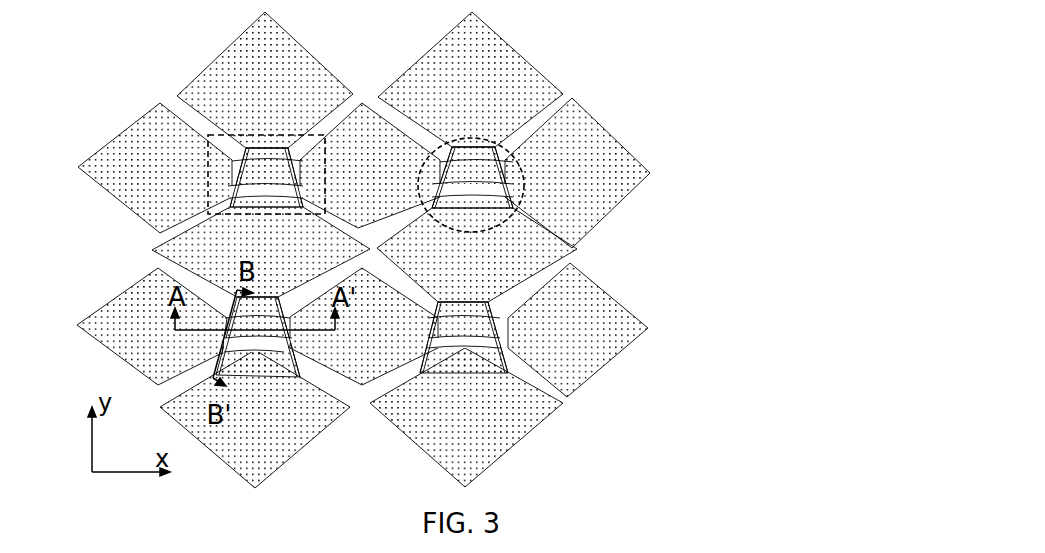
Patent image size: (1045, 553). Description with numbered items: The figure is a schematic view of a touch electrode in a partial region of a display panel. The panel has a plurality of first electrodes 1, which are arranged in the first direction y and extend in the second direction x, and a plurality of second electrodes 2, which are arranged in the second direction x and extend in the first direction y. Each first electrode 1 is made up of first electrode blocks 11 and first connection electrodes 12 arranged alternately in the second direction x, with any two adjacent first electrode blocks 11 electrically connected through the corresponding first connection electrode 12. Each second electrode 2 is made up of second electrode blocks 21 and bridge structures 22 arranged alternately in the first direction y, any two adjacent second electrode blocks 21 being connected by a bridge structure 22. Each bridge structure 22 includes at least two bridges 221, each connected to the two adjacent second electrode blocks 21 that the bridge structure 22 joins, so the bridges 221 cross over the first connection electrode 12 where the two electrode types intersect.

The first electrode 1 is at (576, 328).
The first electrode block 11 is at (607, 340).
The first connection electrode 12 is at (465, 333).
The second electrode 2 is at (547, 116).
The second electrode block 21 is at (498, 108).
The bridge structure 22 is at (517, 163).
The bridge 221 is at (438, 302).